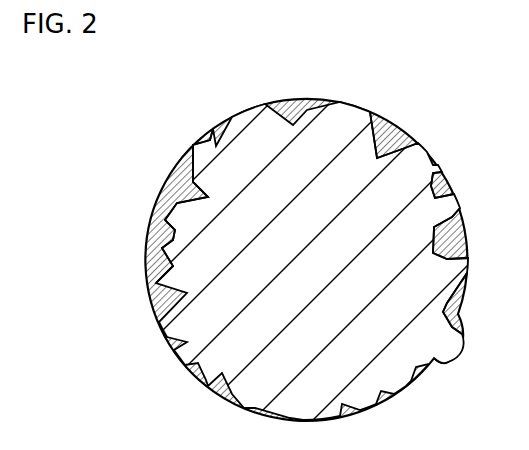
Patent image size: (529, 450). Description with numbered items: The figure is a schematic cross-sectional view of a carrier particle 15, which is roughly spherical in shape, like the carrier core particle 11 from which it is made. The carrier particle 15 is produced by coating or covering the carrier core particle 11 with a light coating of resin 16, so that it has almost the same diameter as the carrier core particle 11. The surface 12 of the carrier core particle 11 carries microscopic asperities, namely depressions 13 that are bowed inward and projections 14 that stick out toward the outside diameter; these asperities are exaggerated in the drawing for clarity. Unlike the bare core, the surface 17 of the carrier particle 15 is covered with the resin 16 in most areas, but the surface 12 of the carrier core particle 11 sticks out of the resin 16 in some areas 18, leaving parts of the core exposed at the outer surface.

The carrier core particle 11 is at (367, 293).
The surface of the carrier core particle 12 is at (413, 52).
The depressions 13 is at (390, 113).
The projections 14 is at (337, 113).
The carrier particle 15 is at (448, 111).
The resin 16 is at (396, 135).
The surface of the carrier particle 17 is at (462, 312).
The areas where the core surface sticks out 18 is at (452, 384).